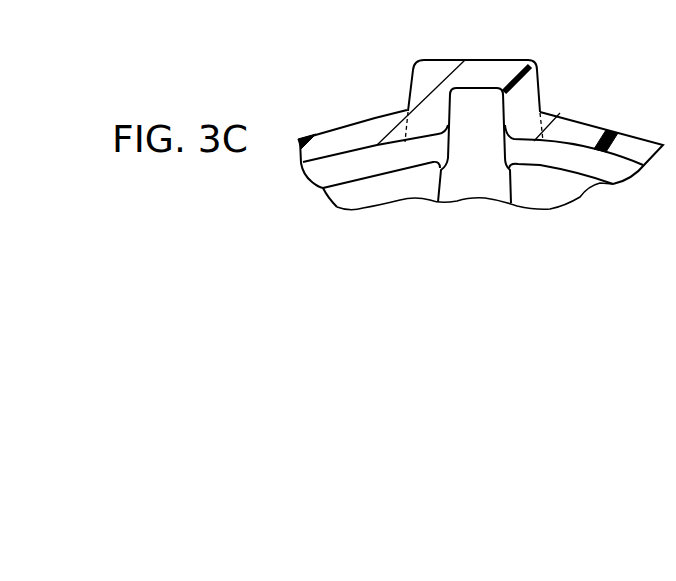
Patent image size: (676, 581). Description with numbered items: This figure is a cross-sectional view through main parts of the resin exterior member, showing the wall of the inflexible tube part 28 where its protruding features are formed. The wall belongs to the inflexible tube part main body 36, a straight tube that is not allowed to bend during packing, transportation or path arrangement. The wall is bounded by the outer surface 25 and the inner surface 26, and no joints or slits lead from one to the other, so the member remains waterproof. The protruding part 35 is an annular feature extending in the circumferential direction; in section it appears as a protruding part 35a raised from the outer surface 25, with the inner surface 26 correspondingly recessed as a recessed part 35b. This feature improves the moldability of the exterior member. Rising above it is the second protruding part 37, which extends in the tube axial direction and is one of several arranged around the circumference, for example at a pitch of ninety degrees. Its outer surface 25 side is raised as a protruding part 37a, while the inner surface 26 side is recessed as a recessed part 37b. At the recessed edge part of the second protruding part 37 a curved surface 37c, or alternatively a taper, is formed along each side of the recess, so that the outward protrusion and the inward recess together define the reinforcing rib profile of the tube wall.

The outer surface 25 is at (317, 132).
The inner surface 26 is at (333, 190).
The inflexible tube part 28 is at (593, 122).
The protruding part 35 is at (342, 134).
The protruding part 35a is at (376, 118).
The recessed part 35b is at (365, 162).
The inflexible tube part main body 36 is at (644, 138).
The second protruding part 37 is at (472, 60).
The protruding part 37a is at (505, 60).
The recessed part 37b is at (477, 114).
The curved surface 37c is at (441, 166).